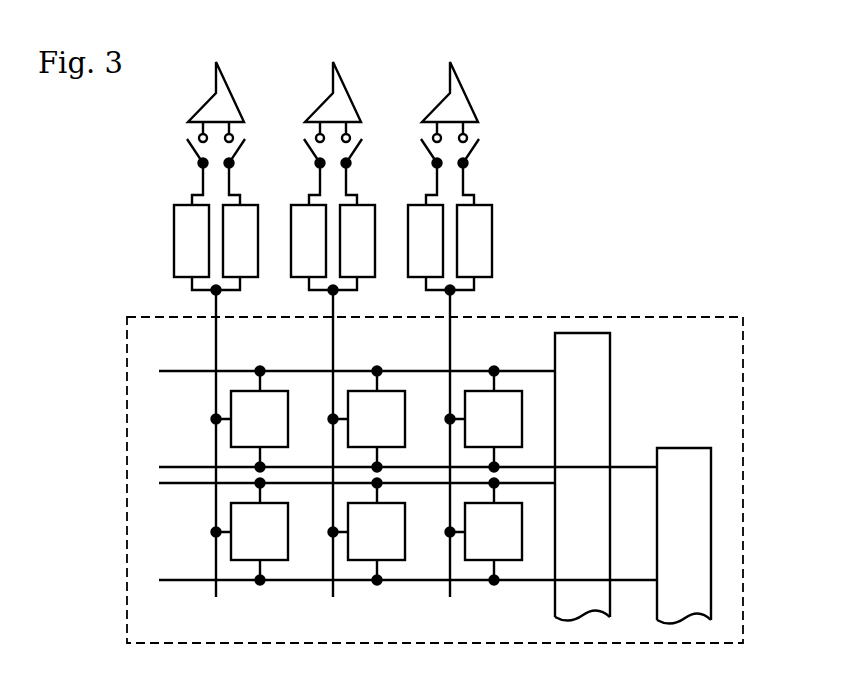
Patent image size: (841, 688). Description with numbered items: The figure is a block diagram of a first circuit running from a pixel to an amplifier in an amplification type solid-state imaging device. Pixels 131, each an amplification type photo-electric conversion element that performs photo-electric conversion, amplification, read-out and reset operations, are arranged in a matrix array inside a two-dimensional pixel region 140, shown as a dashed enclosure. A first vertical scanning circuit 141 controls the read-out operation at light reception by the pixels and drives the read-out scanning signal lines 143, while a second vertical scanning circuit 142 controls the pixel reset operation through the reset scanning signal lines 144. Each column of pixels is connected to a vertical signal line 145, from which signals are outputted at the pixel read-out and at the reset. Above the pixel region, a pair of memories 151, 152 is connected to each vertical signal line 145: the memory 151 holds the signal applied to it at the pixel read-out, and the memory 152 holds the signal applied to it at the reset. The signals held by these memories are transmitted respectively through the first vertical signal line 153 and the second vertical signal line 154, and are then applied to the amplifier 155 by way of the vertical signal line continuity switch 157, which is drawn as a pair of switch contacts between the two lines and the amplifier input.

The pixel 131 is at (475, 391).
The two-dimensional pixel region 140 is at (698, 316).
The first vertical scanning circuit 141 is at (610, 357).
The second vertical scanning circuit 142 is at (690, 448).
The read-out scanning signal line 143 is at (527, 370).
The reset scanning signal line 144 is at (633, 466).
The vertical signal line 145 is at (450, 337).
The memory 151 is at (492, 237).
The memory 152 is at (408, 255).
The first vertical signal line 153 is at (463, 180).
The second vertical signal line 154 is at (435, 178).
The amplifier 155 is at (465, 103).
The vertical signal line continuity switch 157 is at (482, 145).